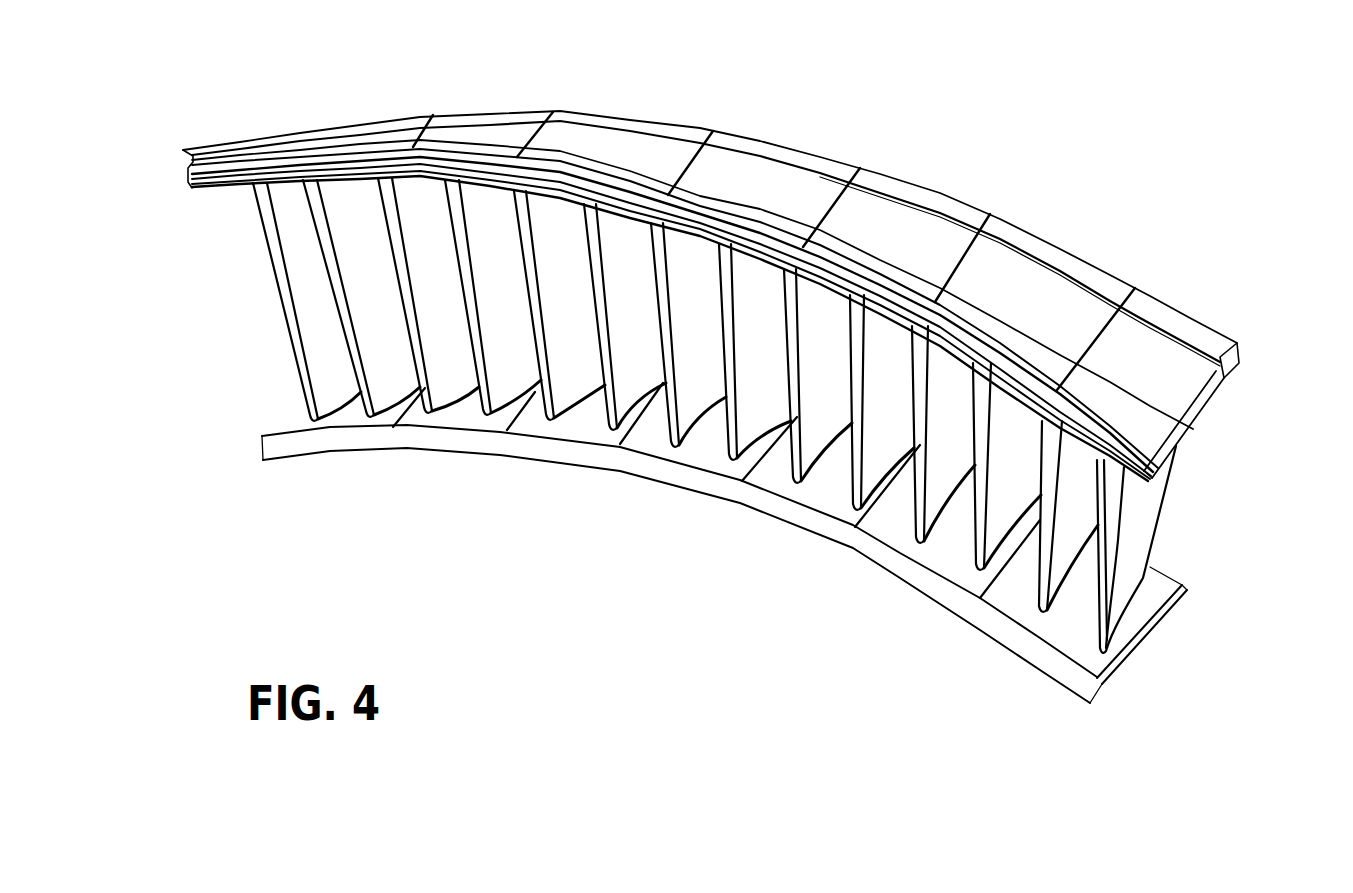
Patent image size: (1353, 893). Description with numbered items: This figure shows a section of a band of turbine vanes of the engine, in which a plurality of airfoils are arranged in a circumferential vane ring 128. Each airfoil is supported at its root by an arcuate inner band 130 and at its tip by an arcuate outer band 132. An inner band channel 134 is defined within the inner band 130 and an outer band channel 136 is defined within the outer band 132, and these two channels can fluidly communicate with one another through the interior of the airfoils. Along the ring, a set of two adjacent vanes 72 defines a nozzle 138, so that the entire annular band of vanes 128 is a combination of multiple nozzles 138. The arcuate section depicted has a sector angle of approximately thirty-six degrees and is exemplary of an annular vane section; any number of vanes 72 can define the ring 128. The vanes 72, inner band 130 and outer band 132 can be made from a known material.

The vane 72 is at (617, 340).
The circumferential vane ring 128 is at (1058, 169).
The arcuate inner band 130 is at (1117, 633).
The arcuate outer band 132 is at (1160, 352).
The inner band channel 134 is at (1122, 677).
The outer band channel 136 is at (1210, 403).
The nozzle 138 is at (437, 100).